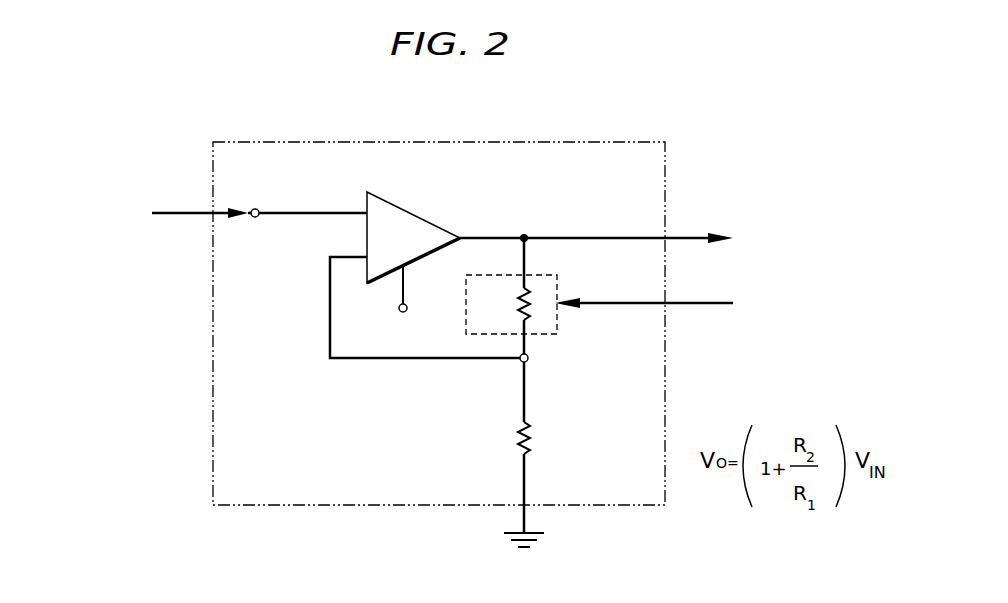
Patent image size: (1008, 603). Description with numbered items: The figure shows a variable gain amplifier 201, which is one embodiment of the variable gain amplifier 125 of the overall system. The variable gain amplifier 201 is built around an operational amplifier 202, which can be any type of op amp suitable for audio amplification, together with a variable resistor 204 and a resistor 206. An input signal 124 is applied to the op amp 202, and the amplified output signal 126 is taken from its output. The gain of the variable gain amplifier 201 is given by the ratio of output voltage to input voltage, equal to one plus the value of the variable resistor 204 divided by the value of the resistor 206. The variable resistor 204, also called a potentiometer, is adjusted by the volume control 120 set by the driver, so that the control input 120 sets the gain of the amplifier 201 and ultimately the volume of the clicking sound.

The variable gain amplifier 125 is at (118, 138).
The variable gain amplifier 201 is at (438, 141).
The operational amplifier 202 is at (408, 211).
The variable resistor 204 is at (557, 322).
The resistor 206 is at (482, 432).
The input signal 124 is at (175, 216).
The output signal 126 is at (688, 237).
The volume control 120 is at (699, 306).